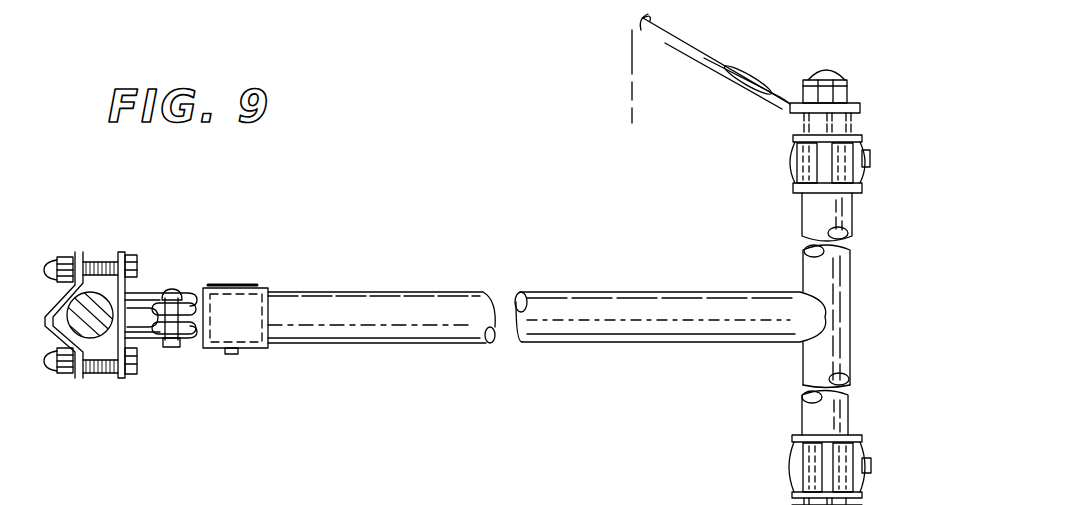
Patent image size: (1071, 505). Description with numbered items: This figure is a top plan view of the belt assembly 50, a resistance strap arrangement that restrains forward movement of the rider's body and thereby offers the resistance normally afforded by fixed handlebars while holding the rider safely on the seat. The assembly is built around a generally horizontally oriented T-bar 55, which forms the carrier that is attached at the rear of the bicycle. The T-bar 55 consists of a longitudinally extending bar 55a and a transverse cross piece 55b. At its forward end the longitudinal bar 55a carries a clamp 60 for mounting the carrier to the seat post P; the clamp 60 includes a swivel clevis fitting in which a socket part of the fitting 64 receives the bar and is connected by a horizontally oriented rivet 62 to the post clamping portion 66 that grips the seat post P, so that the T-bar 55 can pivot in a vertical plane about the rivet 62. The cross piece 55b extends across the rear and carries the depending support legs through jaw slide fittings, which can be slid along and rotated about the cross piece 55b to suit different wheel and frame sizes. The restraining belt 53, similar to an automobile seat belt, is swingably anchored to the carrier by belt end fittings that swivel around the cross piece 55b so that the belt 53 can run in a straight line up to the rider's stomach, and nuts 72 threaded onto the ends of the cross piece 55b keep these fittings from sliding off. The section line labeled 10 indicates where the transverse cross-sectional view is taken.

The section line 10 is at (628, 45).
The belt assembly 50 is at (574, 366).
The restraining belt 53 is at (702, 68).
The T-bar 55 is at (623, 291).
The longitudinally extending bar 55a is at (392, 300).
The cross piece 55b is at (802, 268).
The clamp 60 is at (134, 317).
The rivet 62 is at (173, 348).
The socket part of the fitting 64 is at (243, 284).
The post clamping portion 66 is at (78, 380).
The nuts 72 is at (851, 88).
The seat post P is at (96, 290).